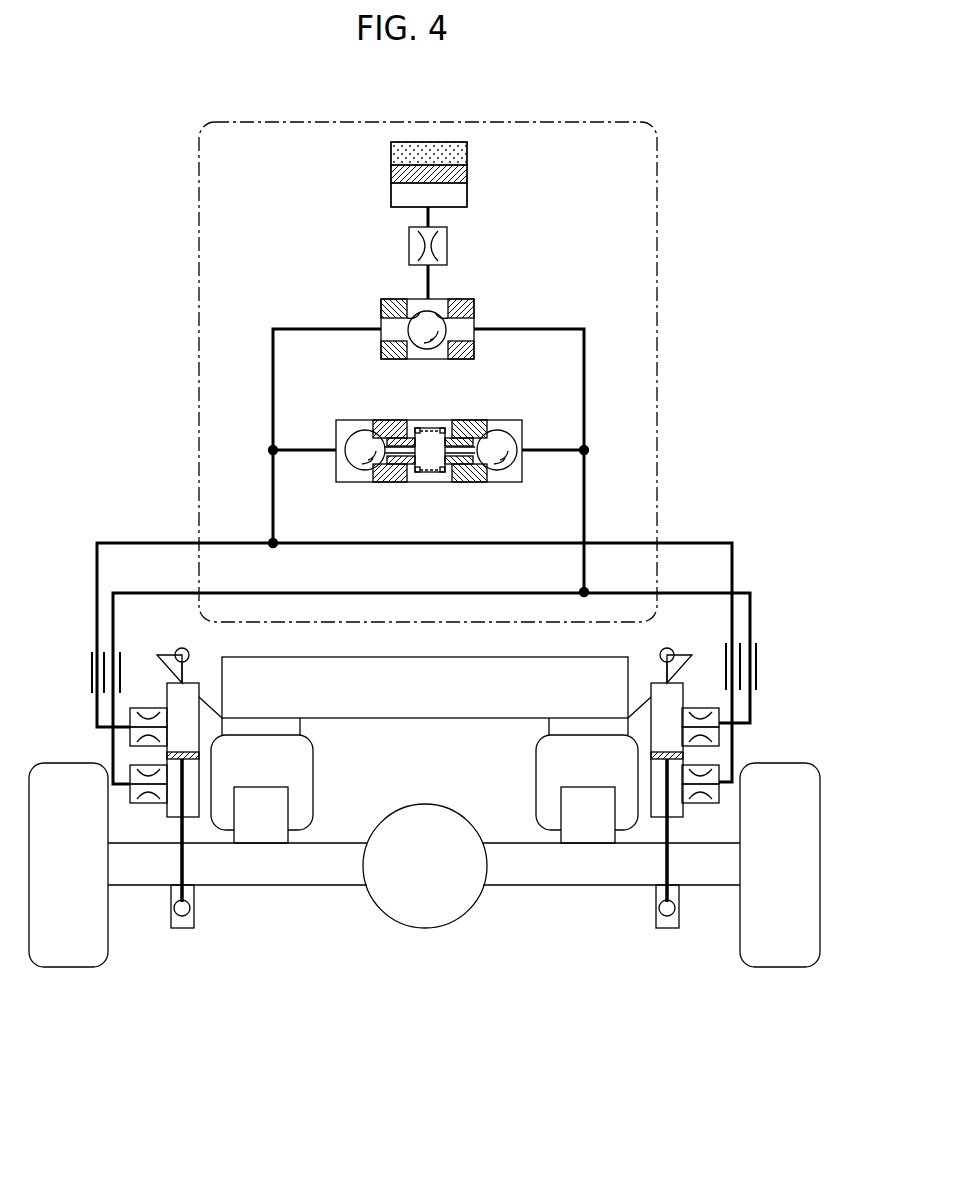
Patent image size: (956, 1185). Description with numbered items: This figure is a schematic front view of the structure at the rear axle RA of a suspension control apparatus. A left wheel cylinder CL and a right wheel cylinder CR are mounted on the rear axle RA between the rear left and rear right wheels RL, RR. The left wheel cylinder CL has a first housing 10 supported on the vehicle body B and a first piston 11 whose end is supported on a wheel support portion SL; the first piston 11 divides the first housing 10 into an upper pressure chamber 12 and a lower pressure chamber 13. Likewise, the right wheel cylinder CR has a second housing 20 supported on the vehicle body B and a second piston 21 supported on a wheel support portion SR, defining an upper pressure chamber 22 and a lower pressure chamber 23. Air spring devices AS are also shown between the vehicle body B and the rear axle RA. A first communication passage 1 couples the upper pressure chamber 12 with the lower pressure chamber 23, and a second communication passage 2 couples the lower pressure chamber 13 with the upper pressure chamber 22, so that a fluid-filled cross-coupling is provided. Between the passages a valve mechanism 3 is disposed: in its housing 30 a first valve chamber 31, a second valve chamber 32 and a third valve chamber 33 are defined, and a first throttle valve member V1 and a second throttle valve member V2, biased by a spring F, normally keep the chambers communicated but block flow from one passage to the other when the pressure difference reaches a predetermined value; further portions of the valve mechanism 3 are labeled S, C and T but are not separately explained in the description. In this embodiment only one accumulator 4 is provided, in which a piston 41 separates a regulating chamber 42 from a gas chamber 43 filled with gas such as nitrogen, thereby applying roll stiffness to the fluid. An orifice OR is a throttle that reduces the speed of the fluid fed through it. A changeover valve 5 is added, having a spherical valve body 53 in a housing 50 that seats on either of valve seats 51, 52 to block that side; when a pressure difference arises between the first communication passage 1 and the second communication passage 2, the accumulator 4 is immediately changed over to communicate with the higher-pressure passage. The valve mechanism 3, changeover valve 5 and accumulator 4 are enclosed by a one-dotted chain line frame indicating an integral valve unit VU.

The first communication passage 1 is at (655, 543).
The second communication passage 2 is at (752, 624).
The valve mechanism 3 is at (433, 441).
The accumulator 4 is at (429, 172).
The changeover valve 5 is at (419, 314).
The first housing 10 is at (194, 762).
The first piston 11 is at (165, 755).
The pressure chamber 12 is at (175, 700).
The pressure chamber 13 is at (175, 808).
The second housing 20 is at (664, 761).
The second piston 21 is at (685, 755).
The pressure chamber 22 is at (680, 700).
The pressure chamber 23 is at (675, 808).
The housing 30 is at (505, 421).
The first valve chamber 31 is at (358, 472).
The second valve chamber 32 is at (498, 472).
The third valve chamber 33 is at (432, 470).
The piston 41 is at (392, 175).
The regulating chamber 42 is at (400, 198).
The gas chamber 43 is at (392, 150).
The housing 50 is at (383, 311).
The valve seat 51 is at (428, 300).
The valve seat 52 is at (470, 318).
The spherical valve body 53 is at (420, 333).
The valve unit VU is at (657, 210).
The orifice OR is at (448, 236).
The first throttle valve member V1 is at (388, 416).
The second throttle valve member V2 is at (463, 416).
The spring F is at (410, 425).
The valve seat S is at (350, 428).
The valve chamber C is at (355, 460).
The tapered portion T is at (392, 468).
The vehicle body B is at (438, 701).
The air spring device AS is at (306, 770).
The rear axle RA is at (343, 878).
The wheel support portion SL is at (190, 922).
The wheel support portion SR is at (660, 925).
The left wheel cylinder CL is at (175, 833).
The right wheel cylinder CR is at (680, 830).
The left rear wheel RL is at (82, 960).
The right rear wheel RR is at (783, 957).